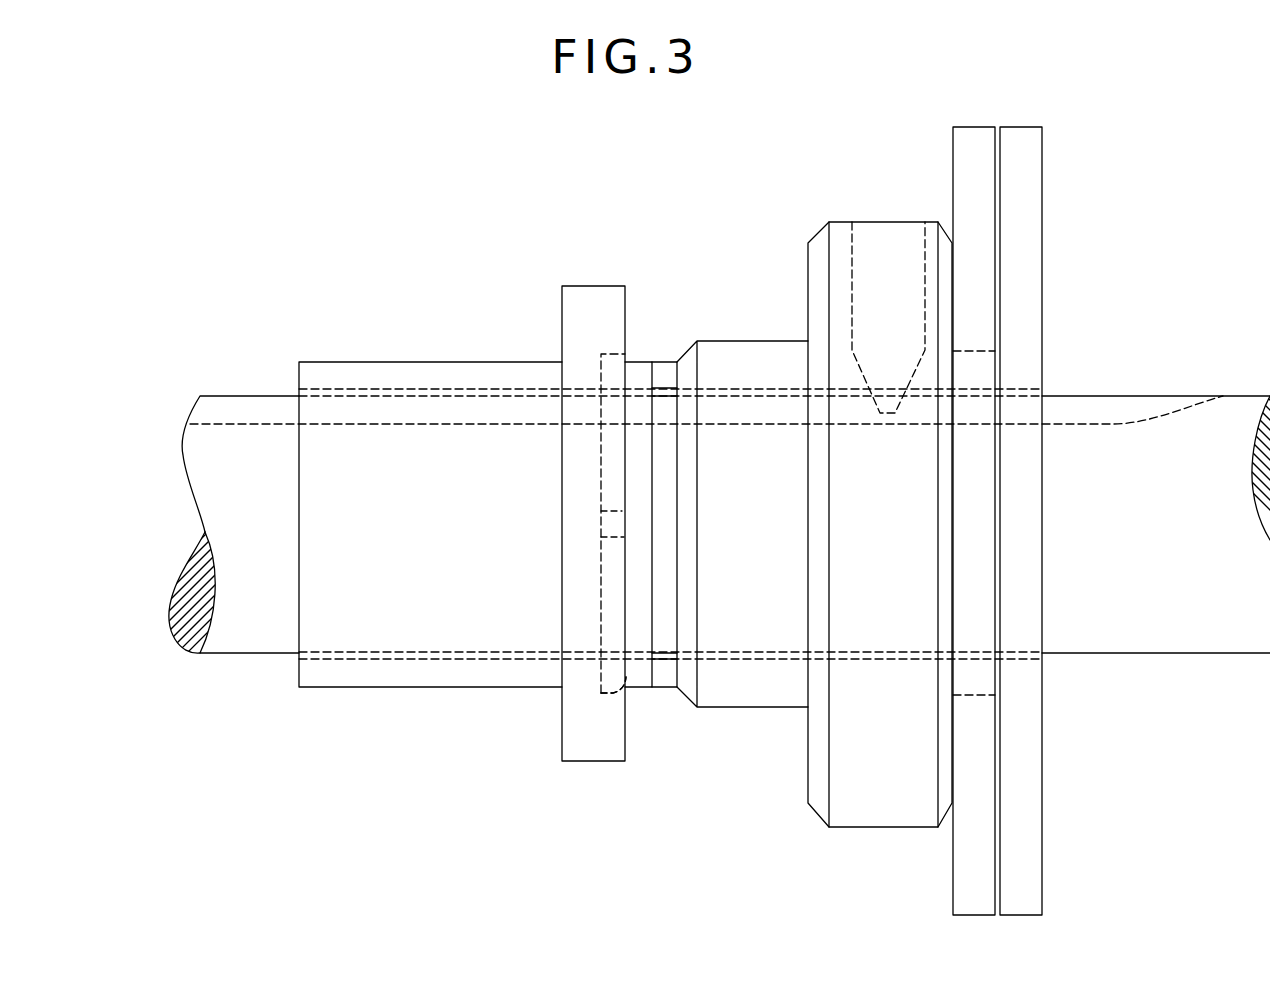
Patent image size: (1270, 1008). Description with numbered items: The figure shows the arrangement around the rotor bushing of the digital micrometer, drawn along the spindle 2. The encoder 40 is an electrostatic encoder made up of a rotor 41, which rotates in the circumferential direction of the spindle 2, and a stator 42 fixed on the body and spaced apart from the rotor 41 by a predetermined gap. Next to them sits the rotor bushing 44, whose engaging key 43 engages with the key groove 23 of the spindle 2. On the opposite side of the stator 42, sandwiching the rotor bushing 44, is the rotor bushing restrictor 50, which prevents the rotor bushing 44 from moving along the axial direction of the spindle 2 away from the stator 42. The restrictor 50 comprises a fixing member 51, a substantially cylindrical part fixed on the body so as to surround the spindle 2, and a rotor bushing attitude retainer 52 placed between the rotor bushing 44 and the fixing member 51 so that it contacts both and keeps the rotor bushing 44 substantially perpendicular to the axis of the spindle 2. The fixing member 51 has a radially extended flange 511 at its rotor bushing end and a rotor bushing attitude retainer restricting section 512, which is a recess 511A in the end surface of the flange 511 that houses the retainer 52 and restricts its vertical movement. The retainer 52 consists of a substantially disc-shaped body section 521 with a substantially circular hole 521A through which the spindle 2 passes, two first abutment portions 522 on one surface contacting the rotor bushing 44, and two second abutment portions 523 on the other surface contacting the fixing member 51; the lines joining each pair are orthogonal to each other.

The spindle 2 is at (200, 455).
The key groove 23 is at (247, 410).
The encoder 40 is at (944, 67).
The rotor 41 is at (970, 127).
The stator 42 is at (1022, 127).
The engaging key 43 is at (890, 235).
The rotor bushing 44 is at (843, 222).
The rotor bushing restrictor 50 is at (528, 205).
The fixing member 51 is at (541, 362).
The rotor bushing attitude retainer 52 is at (629, 362).
The flange 511 is at (593, 762).
The rotor bushing attitude retainer restricting section 512 is at (628, 677).
The recess 511A is at (613, 685).
The body section 521 is at (642, 368).
The hole 521A is at (643, 388).
The first abutment portions 522 is at (663, 366).
The second abutment portions 523 is at (601, 527).